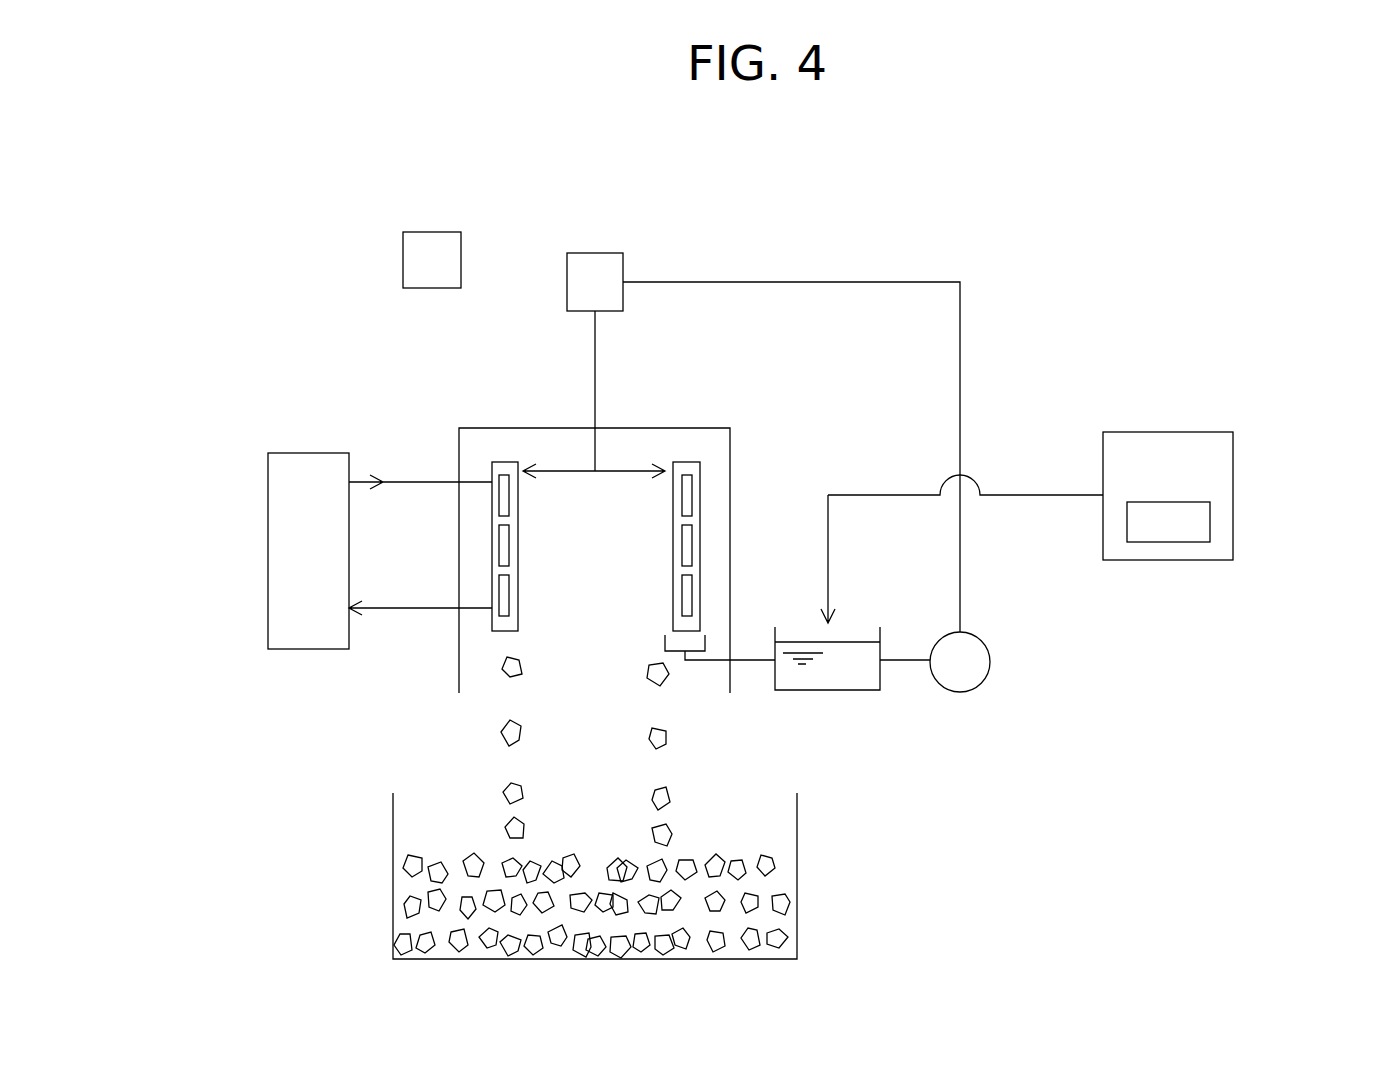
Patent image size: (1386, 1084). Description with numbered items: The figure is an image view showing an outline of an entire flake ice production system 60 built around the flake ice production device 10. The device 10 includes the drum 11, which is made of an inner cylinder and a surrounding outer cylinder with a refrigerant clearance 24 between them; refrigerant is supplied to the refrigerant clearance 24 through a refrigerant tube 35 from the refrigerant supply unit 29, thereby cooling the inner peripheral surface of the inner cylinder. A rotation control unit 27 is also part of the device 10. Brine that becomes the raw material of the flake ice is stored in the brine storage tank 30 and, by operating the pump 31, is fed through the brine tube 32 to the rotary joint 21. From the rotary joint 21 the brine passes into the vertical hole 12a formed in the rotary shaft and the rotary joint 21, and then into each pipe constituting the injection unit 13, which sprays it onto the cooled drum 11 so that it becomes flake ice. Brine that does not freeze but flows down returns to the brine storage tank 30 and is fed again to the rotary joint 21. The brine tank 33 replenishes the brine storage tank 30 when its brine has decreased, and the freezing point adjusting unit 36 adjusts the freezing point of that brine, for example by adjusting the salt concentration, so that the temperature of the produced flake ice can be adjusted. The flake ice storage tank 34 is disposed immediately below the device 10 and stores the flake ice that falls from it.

The flake ice production device 10 is at (455, 378).
The drum 11 is at (492, 541).
The vertical hole 12a is at (597, 382).
The injection unit 13 is at (566, 466).
The rotary joint 21 is at (578, 272).
The refrigerant clearance 24 is at (688, 486).
The rotation control unit 27 is at (415, 252).
The refrigerant supply unit 29 is at (268, 556).
The brine storage tank 30 is at (817, 692).
The pump 31 is at (994, 668).
The brine tube 32 is at (961, 346).
The brine tank 33 is at (1234, 478).
The flake ice storage tank 34 is at (799, 898).
The refrigerant tube 35 is at (406, 480).
The freezing point adjusting unit 36 is at (1193, 538).
The flake ice production system 60 is at (818, 218).